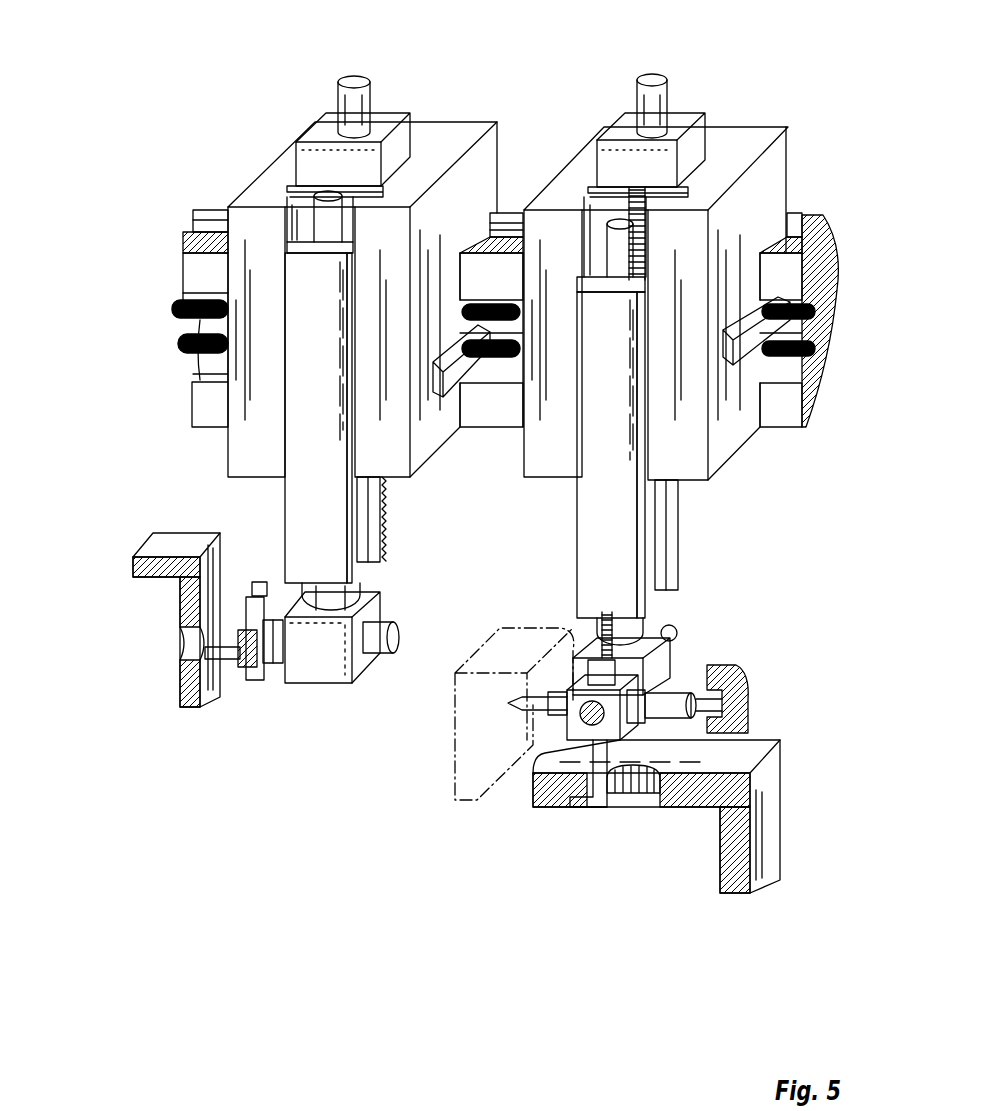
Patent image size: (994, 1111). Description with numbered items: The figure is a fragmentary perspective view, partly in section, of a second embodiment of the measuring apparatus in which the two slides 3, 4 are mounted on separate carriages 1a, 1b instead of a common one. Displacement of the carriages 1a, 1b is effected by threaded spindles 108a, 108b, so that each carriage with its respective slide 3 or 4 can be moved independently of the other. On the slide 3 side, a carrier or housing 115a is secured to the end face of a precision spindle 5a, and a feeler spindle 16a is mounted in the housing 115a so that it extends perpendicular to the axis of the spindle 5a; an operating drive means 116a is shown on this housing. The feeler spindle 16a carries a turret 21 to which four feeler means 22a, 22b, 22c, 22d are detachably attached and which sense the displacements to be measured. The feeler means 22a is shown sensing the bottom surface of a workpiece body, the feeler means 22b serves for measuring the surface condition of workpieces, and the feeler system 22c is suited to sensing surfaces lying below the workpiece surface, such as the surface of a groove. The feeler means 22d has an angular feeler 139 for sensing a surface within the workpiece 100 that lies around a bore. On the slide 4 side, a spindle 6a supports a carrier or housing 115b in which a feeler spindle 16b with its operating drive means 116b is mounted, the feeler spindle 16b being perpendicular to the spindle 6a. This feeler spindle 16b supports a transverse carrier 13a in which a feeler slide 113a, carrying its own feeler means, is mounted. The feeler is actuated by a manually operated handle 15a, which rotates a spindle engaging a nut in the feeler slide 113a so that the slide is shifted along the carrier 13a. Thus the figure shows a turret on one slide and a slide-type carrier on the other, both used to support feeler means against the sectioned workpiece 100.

The carriage 1a is at (738, 148).
The carriage 1b is at (440, 150).
The slide 3 is at (630, 507).
The slide 4 is at (317, 511).
The precision spindle 5a is at (648, 637).
The spindle 6a is at (333, 595).
The transverse carrier 13a is at (270, 682).
The manually operated handle 15a is at (253, 590).
The feeler spindle 16a is at (590, 727).
The feeler spindle 16b is at (300, 683).
The turret 21 is at (636, 690).
The feeler means 22a is at (522, 707).
The feeler means 22b is at (612, 609).
The feeler system 22c is at (657, 705).
The feeler means 22d is at (607, 783).
The workpiece 100 is at (222, 682).
The threaded spindle 108a is at (180, 306).
The threaded spindle 108b is at (183, 346).
The feeler slide 113a is at (253, 682).
The carrier or housing 115a is at (655, 668).
The carrier or housing 115b is at (333, 680).
The operating drive means 116a is at (677, 630).
The operating drive means 116b is at (400, 627).
The angular feeler 139 is at (596, 810).